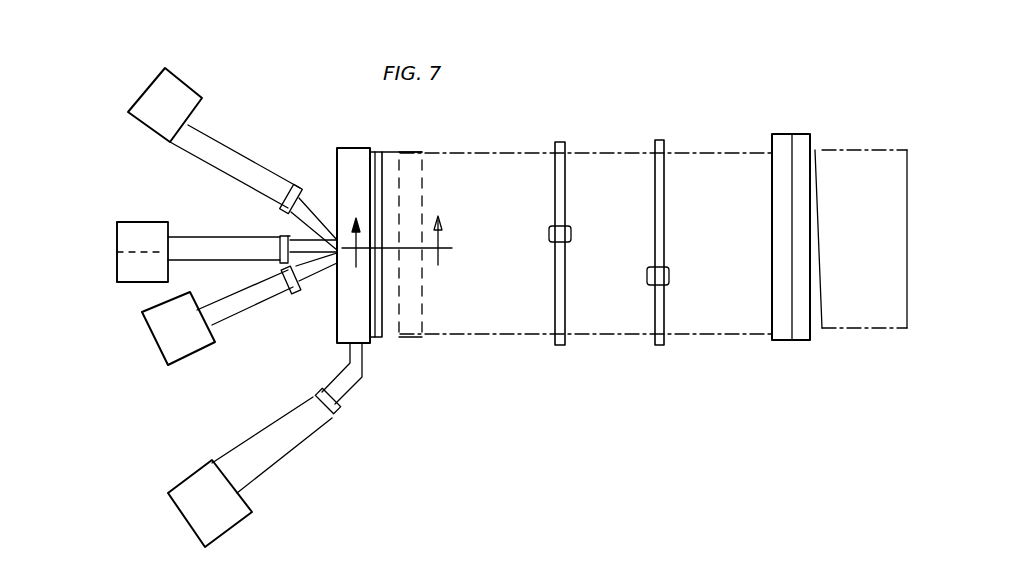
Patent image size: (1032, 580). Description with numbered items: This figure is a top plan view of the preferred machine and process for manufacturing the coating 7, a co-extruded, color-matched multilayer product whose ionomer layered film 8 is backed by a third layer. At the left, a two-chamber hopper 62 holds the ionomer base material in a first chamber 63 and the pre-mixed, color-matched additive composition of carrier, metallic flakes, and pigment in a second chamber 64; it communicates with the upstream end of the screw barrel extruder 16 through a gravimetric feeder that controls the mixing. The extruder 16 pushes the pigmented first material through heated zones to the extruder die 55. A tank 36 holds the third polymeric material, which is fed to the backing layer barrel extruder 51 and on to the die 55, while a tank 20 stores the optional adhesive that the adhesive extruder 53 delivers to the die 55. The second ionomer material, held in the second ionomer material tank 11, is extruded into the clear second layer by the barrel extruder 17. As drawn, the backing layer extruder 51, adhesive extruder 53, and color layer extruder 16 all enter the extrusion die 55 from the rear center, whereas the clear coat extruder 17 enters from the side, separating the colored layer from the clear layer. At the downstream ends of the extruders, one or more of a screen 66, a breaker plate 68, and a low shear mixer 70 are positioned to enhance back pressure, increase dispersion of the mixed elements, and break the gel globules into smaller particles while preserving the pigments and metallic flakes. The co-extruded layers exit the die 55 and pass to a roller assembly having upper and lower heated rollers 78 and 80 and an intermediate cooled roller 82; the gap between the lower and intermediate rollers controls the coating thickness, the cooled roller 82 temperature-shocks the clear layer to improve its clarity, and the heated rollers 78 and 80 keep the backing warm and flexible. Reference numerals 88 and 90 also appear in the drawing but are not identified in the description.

The coating 7 is at (608, 163).
The film 8 is at (399, 229).
The second ionomer material tank 11 is at (193, 520).
The screw barrel extruder 16 is at (212, 235).
The barrel extruder 17 is at (265, 450).
The tank 20 is at (137, 107).
The tank 36 is at (158, 335).
The barrel extruder 51 is at (243, 303).
The extruder 53 is at (230, 140).
The extruder die 55 is at (367, 345).
The two-chamber hopper 62 is at (128, 214).
The first chamber 63 is at (120, 237).
The second chamber 64 is at (118, 268).
The screen 66 is at (297, 187).
The breaker plate 68 is at (298, 193).
The low shear mixer 70 is at (280, 235).
The upper heated roller 78 is at (375, 152).
The lower heated roller 80 is at (415, 168).
The intermediate cooled roller 82 is at (392, 152).
The support post 88 is at (552, 240).
The clamp 90 is at (668, 277).